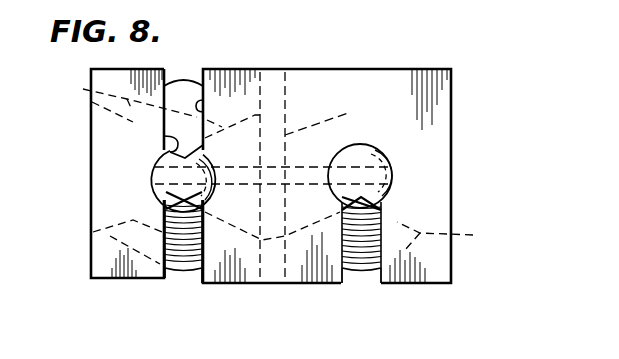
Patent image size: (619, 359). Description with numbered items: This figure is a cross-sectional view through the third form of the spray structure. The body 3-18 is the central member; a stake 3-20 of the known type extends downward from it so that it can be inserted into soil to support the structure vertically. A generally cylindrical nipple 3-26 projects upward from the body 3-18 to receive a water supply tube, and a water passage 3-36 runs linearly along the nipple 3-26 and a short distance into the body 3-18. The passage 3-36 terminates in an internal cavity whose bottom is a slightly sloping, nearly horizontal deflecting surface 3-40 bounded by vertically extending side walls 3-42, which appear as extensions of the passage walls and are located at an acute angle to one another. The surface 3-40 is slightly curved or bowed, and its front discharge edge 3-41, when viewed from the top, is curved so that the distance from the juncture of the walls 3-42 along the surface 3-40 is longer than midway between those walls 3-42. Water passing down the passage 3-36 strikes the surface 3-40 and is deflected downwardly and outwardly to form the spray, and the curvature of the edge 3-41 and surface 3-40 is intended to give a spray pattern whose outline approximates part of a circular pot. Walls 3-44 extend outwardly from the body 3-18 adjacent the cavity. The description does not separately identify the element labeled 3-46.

The body 3-18 is at (452, 98).
The stake 3-20 is at (279, 176).
The nipple 3-26 is at (153, 163).
The water passage 3-36 is at (166, 147).
The deflecting surface 3-40 is at (190, 97).
The discharge edge 3-41 is at (185, 80).
The side walls 3-42 is at (93, 233).
The walls 3-44 is at (128, 69).
The slot 3-46 is at (203, 101).